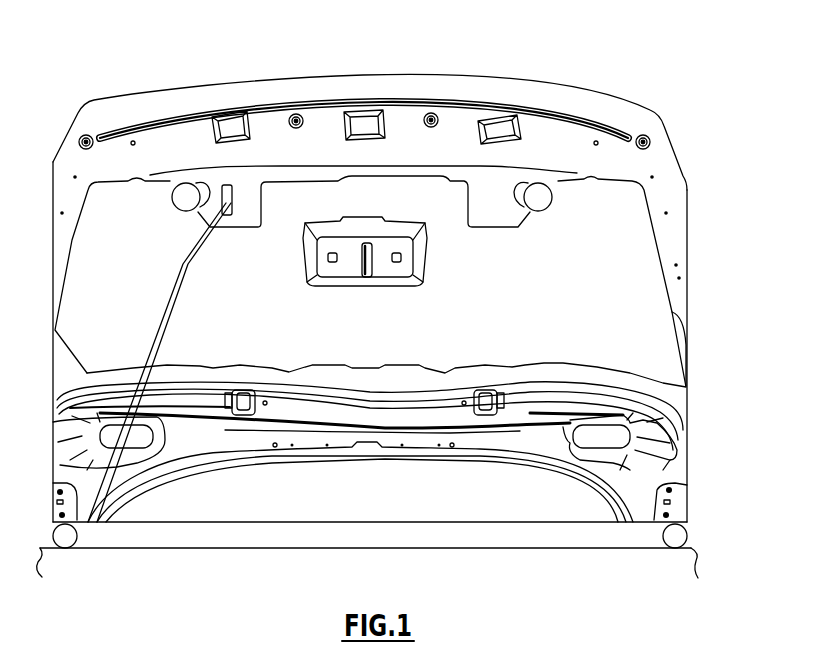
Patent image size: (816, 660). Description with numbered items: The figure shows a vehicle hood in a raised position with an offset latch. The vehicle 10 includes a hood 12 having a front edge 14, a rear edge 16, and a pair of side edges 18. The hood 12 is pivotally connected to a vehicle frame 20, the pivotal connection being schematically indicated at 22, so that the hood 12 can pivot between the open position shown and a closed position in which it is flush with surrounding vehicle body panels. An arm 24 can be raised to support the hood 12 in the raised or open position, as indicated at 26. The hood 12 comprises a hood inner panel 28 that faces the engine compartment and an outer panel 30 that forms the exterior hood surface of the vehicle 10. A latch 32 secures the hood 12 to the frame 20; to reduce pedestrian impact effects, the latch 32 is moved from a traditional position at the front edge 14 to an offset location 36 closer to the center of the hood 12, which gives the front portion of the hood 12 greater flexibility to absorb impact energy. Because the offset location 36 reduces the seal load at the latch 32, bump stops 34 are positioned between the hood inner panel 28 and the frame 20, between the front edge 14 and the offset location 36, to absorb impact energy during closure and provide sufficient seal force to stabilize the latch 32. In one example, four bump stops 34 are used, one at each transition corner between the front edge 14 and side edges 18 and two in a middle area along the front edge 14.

The vehicle 10 is at (402, 275).
The hood 12 is at (542, 156).
The front edge 14 is at (337, 74).
The rear edge 16 is at (597, 475).
The side edges 18 is at (62, 148).
The vehicle frame 20 is at (215, 548).
The pivotal connection 22 is at (705, 532).
The arm 24 is at (128, 437).
The support location 26 is at (238, 197).
The hood inner panel 28 is at (399, 172).
The outer panel 30 is at (515, 107).
The latch 32 is at (370, 257).
The bump stops 34 is at (80, 136).
The offset location 36 is at (365, 234).